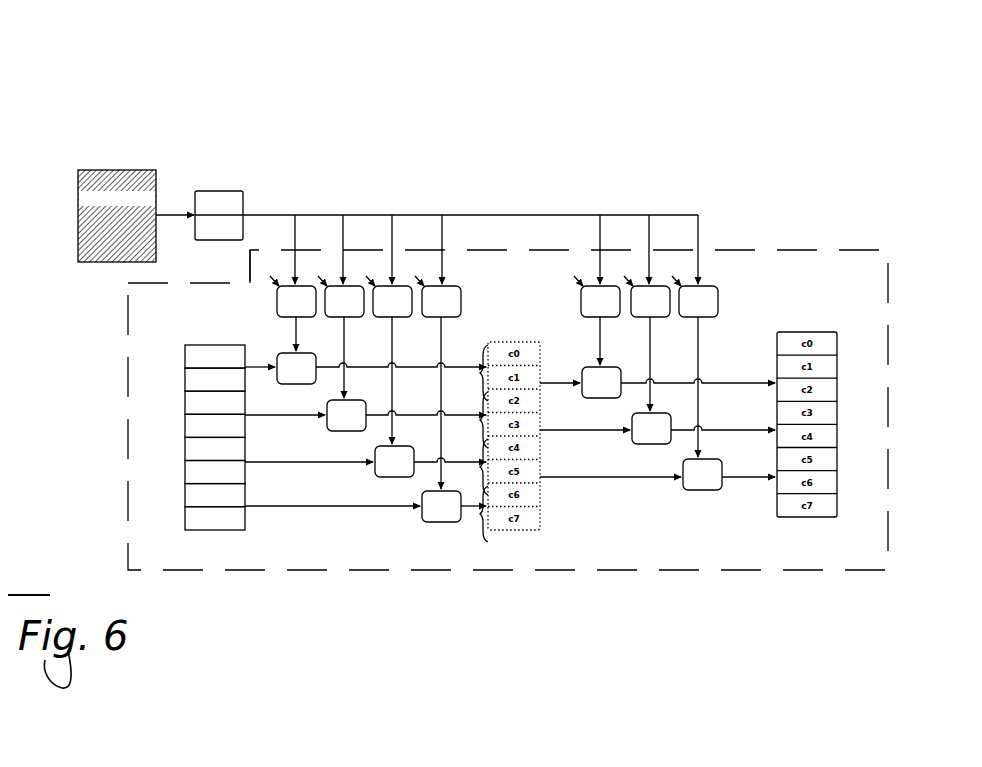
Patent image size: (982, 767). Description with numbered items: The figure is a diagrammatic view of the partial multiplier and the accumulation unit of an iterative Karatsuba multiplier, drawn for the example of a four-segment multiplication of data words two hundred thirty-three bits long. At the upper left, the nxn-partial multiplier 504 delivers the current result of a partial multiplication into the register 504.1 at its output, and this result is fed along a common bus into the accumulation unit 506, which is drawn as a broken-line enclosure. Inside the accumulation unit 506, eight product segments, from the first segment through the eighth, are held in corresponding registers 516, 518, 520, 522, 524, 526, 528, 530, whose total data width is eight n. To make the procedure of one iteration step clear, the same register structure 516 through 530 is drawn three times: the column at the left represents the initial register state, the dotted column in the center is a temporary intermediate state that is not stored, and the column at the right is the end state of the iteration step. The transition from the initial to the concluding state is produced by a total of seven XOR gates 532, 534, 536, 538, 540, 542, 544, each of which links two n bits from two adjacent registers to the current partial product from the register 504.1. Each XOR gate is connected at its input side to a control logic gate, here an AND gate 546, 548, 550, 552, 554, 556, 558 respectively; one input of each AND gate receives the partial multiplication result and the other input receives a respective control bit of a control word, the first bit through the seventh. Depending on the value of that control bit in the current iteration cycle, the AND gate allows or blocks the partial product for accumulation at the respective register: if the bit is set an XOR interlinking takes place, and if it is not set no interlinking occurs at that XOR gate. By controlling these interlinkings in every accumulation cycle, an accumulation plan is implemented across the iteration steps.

The partial multiplier 504 is at (108, 165).
The register 504.1 is at (222, 190).
The accumulation unit 506 is at (720, 250).
The register 516 is at (185, 360).
The register 518 is at (185, 384).
The register 520 is at (185, 405).
The register 522 is at (185, 425).
The register 524 is at (185, 448).
The register 526 is at (185, 475).
The register 528 is at (185, 495).
The register 530 is at (185, 518).
The XOR gate 532 is at (300, 384).
The XOR gate 534 is at (347, 431).
The XOR gate 536 is at (398, 477).
The XOR gate 538 is at (445, 522).
The XOR gate 540 is at (600, 398).
The XOR gate 542 is at (650, 444).
The XOR gate 544 is at (705, 492).
The AND gate 546 is at (310, 285).
The AND gate 548 is at (355, 287).
The AND gate 550 is at (400, 287).
The AND gate 552 is at (452, 287).
The AND gate 554 is at (610, 285).
The AND gate 556 is at (653, 285).
The AND gate 558 is at (707, 285).